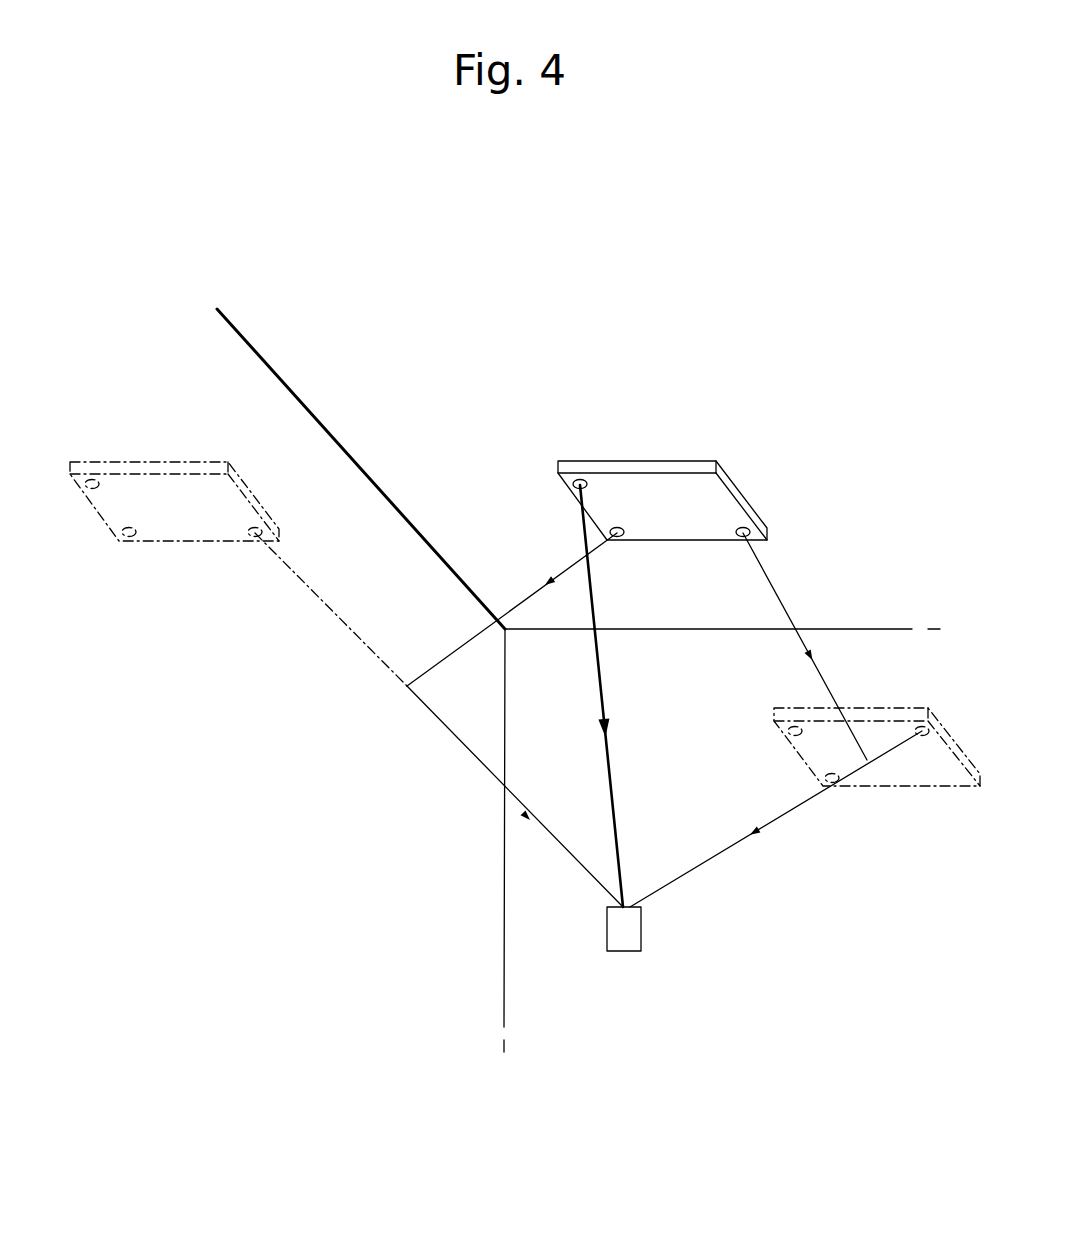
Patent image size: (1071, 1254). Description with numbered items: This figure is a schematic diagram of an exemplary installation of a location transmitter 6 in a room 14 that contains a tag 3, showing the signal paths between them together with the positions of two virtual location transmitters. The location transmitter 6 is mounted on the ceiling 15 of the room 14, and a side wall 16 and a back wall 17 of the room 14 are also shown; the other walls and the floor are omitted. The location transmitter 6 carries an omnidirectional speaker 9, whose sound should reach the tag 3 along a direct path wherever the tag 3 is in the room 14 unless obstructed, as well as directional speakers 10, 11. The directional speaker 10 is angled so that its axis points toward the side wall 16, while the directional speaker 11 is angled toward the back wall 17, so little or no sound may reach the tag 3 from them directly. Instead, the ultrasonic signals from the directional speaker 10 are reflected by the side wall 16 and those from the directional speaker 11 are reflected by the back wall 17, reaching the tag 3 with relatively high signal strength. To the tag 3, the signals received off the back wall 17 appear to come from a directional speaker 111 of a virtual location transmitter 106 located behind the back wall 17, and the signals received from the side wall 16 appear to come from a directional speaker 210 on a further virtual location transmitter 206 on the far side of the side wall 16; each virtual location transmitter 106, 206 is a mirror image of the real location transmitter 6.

The tag 3 is at (632, 934).
The location transmitter 6 is at (688, 487).
The omnidirectional speaker 9 is at (572, 484).
The directional speaker 10 is at (618, 538).
The directional speaker 11 is at (748, 530).
The room 14 is at (496, 333).
The ceiling 15 is at (579, 623).
The side wall 16 is at (492, 695).
The back wall 17 is at (566, 677).
The virtual location transmitter 106 is at (906, 775).
The directional speaker 111 is at (922, 731).
The virtual location transmitter 206 is at (163, 492).
The directional speaker 210 is at (255, 538).